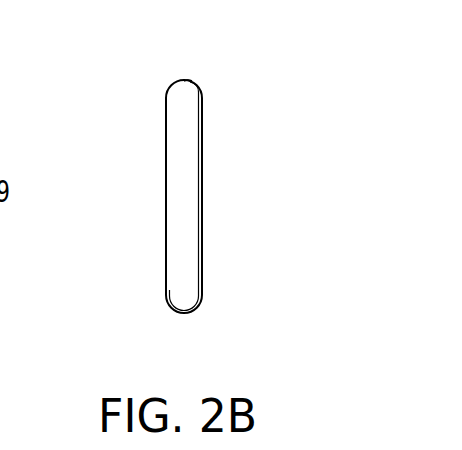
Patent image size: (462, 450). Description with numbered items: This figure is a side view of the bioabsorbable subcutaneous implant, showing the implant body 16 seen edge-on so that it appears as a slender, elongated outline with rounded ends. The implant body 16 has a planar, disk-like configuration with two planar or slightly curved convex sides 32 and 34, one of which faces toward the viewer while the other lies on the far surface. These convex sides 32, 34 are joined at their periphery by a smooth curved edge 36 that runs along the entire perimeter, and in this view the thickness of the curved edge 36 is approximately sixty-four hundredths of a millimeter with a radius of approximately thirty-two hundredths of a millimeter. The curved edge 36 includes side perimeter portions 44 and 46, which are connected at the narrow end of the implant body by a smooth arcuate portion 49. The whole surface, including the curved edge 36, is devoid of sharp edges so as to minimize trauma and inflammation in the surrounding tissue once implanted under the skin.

The implant body 16 is at (117, 87).
The convex side 32 is at (166, 184).
The convex side 34 is at (201, 160).
The side perimeter portion 44 is at (188, 80).
The smooth arcuate portion 49 is at (183, 195).
The side perimeter portion 46 is at (183, 308).
The curved edge 36 is at (178, 329).